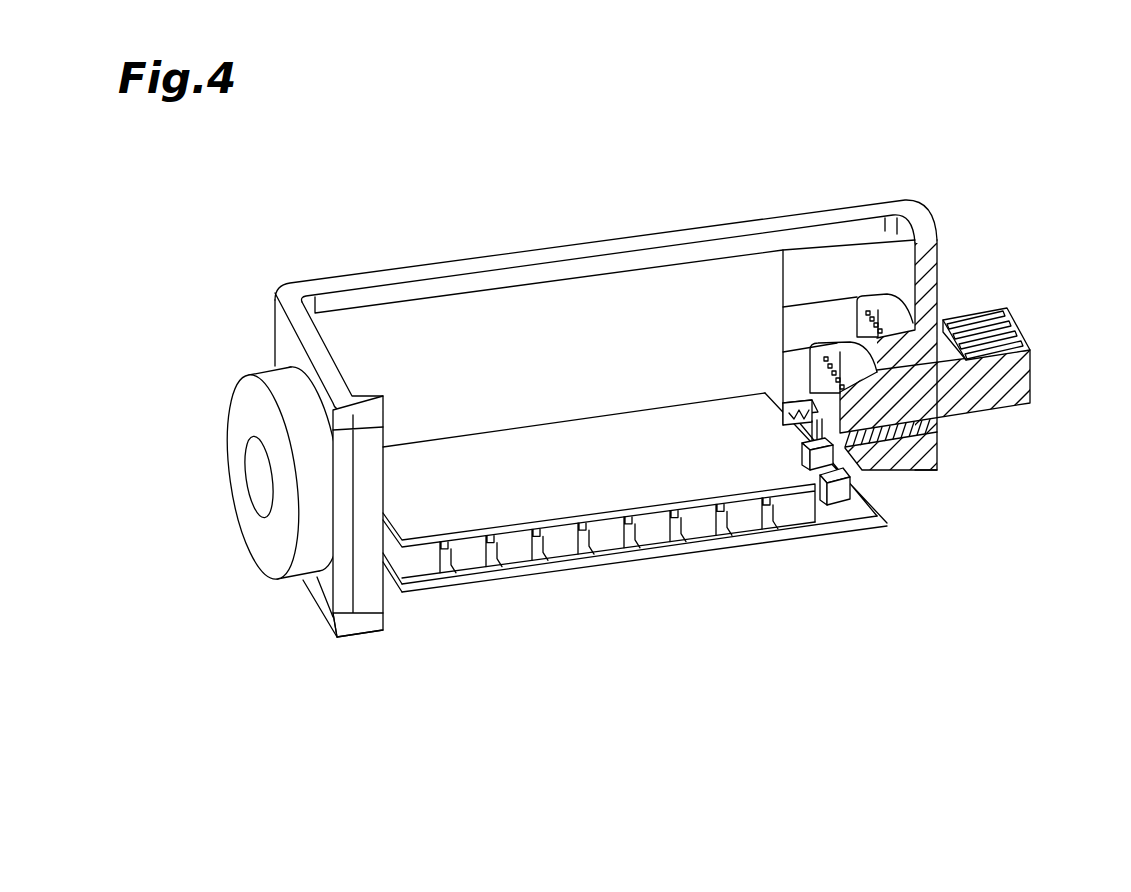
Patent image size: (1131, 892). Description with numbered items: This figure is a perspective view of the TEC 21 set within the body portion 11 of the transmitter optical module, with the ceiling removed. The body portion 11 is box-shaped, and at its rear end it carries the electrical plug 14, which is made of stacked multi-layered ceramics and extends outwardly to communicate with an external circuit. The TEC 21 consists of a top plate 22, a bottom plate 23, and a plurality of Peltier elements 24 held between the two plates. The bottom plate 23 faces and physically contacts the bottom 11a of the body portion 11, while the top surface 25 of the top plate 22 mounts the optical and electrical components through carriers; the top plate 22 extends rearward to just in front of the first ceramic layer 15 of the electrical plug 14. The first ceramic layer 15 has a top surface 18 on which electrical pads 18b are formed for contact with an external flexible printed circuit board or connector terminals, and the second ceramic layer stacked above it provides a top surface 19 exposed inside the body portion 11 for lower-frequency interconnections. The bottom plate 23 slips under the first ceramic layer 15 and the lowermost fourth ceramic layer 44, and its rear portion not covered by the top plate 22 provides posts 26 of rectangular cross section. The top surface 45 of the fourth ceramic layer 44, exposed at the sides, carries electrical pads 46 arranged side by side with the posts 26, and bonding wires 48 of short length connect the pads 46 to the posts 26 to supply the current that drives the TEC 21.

The body portion 11 is at (312, 258).
The bottom 11a is at (902, 455).
The electrical plug 14 is at (982, 312).
The first ceramic layer 15 is at (1033, 371).
The top surface 18 is at (843, 352).
The electrical pads 18b is at (1018, 322).
The top surface 19 is at (882, 307).
The TEC 21 is at (473, 592).
The top plate 22 is at (658, 520).
The bottom plate 23 is at (737, 548).
The Peltier elements 24 is at (560, 552).
The top surface 25 is at (460, 466).
The posts 26 is at (817, 482).
The fourth ceramic layer 44 is at (930, 427).
The top surface 45 is at (800, 403).
The electrical pads 46 is at (788, 414).
The bonding wires 48 is at (795, 436).